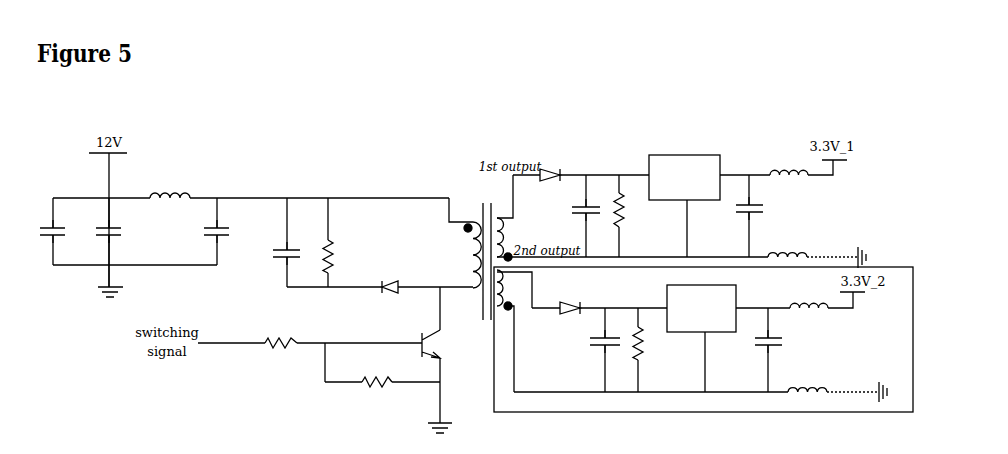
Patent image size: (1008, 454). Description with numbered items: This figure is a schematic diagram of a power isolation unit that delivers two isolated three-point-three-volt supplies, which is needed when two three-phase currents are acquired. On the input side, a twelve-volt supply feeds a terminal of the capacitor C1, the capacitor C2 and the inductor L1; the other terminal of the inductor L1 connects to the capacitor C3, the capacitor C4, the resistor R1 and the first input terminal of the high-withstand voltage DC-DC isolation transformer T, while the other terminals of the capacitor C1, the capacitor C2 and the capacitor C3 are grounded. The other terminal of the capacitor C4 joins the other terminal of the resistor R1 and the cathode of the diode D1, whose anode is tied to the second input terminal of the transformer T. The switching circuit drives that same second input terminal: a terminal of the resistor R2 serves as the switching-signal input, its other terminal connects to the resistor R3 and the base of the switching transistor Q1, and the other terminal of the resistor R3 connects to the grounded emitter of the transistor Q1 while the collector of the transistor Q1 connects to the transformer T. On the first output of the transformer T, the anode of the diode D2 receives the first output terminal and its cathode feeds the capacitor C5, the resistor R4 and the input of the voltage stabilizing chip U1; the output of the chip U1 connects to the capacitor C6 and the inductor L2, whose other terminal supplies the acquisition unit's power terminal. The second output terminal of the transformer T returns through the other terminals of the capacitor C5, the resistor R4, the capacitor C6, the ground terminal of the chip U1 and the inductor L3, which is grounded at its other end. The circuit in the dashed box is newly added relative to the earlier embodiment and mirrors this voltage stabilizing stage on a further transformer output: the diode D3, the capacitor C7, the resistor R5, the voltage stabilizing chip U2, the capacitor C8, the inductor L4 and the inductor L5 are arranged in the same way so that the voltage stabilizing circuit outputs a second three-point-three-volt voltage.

The inductor L1 is at (170, 184).
The capacitor C1 is at (63, 231).
The capacitor C2 is at (120, 231).
The capacitor C3 is at (228, 231).
The capacitor C4 is at (277, 257).
The resistor R1 is at (316, 256).
The diode D1 is at (400, 296).
The resistor R2 is at (281, 354).
The resistor R3 is at (377, 391).
The switching transistor Q1 is at (447, 344).
The high-withstand voltage DC-DC isolation transformer T is at (488, 253).
The diode D2 is at (550, 186).
The capacitor C5 is at (591, 203).
The resistor R4 is at (633, 210).
The voltage stabilizing chip U1 is at (684, 167).
The capacitor C6 is at (744, 205).
The inductor L2 is at (789, 164).
The inductor L3 is at (787, 246).
The second output rectifier diode D3 is at (570, 319).
The second output filter capacitor C7 is at (609, 336).
The second output load resistor R5 is at (652, 343).
The second voltage regulator U2 is at (701, 301).
The second regulator output capacitor C8 is at (763, 338).
The second output inductor L4 is at (809, 297).
The second output ground inductor L5 is at (807, 380).